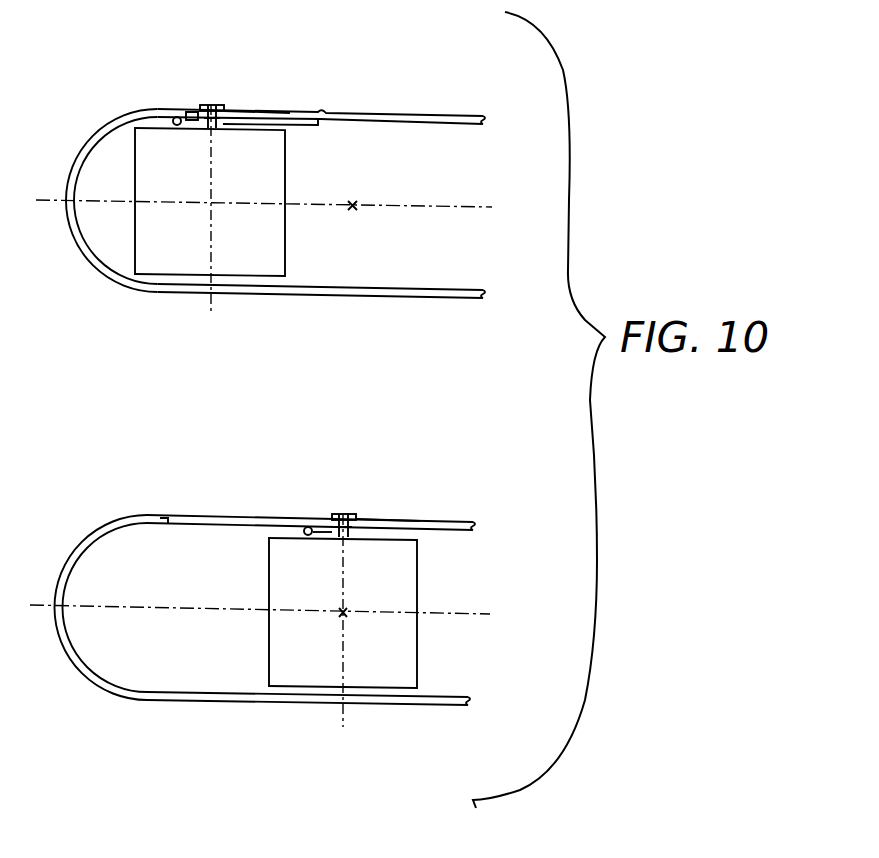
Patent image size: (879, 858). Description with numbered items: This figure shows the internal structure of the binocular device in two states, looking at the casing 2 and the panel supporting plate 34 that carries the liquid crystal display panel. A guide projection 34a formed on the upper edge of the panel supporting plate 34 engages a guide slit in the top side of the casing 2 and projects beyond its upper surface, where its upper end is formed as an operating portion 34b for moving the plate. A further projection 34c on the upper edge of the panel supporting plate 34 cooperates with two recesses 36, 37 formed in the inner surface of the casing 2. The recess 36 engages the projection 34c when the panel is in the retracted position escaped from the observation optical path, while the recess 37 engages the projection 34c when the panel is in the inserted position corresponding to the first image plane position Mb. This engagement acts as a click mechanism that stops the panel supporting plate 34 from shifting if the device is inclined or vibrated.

The casing 2 is at (92, 135).
The panel supporting plate 34 is at (158, 277).
The guide projection 34a is at (225, 113).
The operating portion 34b is at (208, 107).
The projection 34c is at (193, 108).
The recess 36 is at (177, 112).
The recess 37 is at (318, 115).
The first image plane position Mb is at (353, 207).